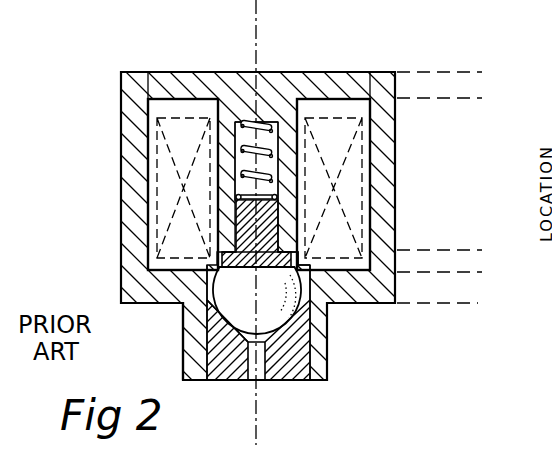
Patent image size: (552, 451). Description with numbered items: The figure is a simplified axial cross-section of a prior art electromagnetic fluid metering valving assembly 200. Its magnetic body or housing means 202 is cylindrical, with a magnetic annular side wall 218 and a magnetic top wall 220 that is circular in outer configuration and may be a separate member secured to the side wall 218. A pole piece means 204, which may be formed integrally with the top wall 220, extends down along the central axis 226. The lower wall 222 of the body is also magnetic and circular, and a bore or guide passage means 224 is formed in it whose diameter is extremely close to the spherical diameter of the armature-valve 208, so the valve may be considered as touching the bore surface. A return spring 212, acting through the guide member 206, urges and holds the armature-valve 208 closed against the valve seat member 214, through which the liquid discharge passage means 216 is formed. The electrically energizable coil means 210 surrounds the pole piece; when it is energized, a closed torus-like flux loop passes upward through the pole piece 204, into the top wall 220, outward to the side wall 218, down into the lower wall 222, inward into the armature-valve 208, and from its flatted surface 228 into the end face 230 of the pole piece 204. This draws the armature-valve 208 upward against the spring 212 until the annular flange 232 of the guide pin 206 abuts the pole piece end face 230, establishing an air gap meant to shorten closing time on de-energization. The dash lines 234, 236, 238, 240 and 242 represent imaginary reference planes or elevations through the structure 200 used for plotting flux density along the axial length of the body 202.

The electromagnetic assembly 200 is at (131, 57).
The magnetic body or housing means 202 is at (118, 162).
The pole piece means 204 is at (210, 195).
The guide member 206 is at (228, 222).
The armature-valve 208 is at (238, 314).
The electrically energizable coil means 210 is at (172, 177).
The return spring 212 is at (236, 128).
The valve seat member 214 is at (280, 373).
The liquid discharge passage means 216 is at (268, 357).
The magnetic annular side wall 218 is at (383, 193).
The top wall 220 is at (195, 73).
The lower wall 222 is at (161, 298).
The guide passage means 224 is at (236, 318).
The central axis 226 is at (259, 50).
The flatted surface 228 is at (257, 300).
The end face 230 is at (226, 252).
The annular flange 232 is at (330, 272).
The dash line 234 is at (446, 303).
The dash line 236 is at (457, 273).
The dash line 238 is at (450, 250).
The dash line 240 is at (432, 98).
The dash line 242 is at (466, 72).